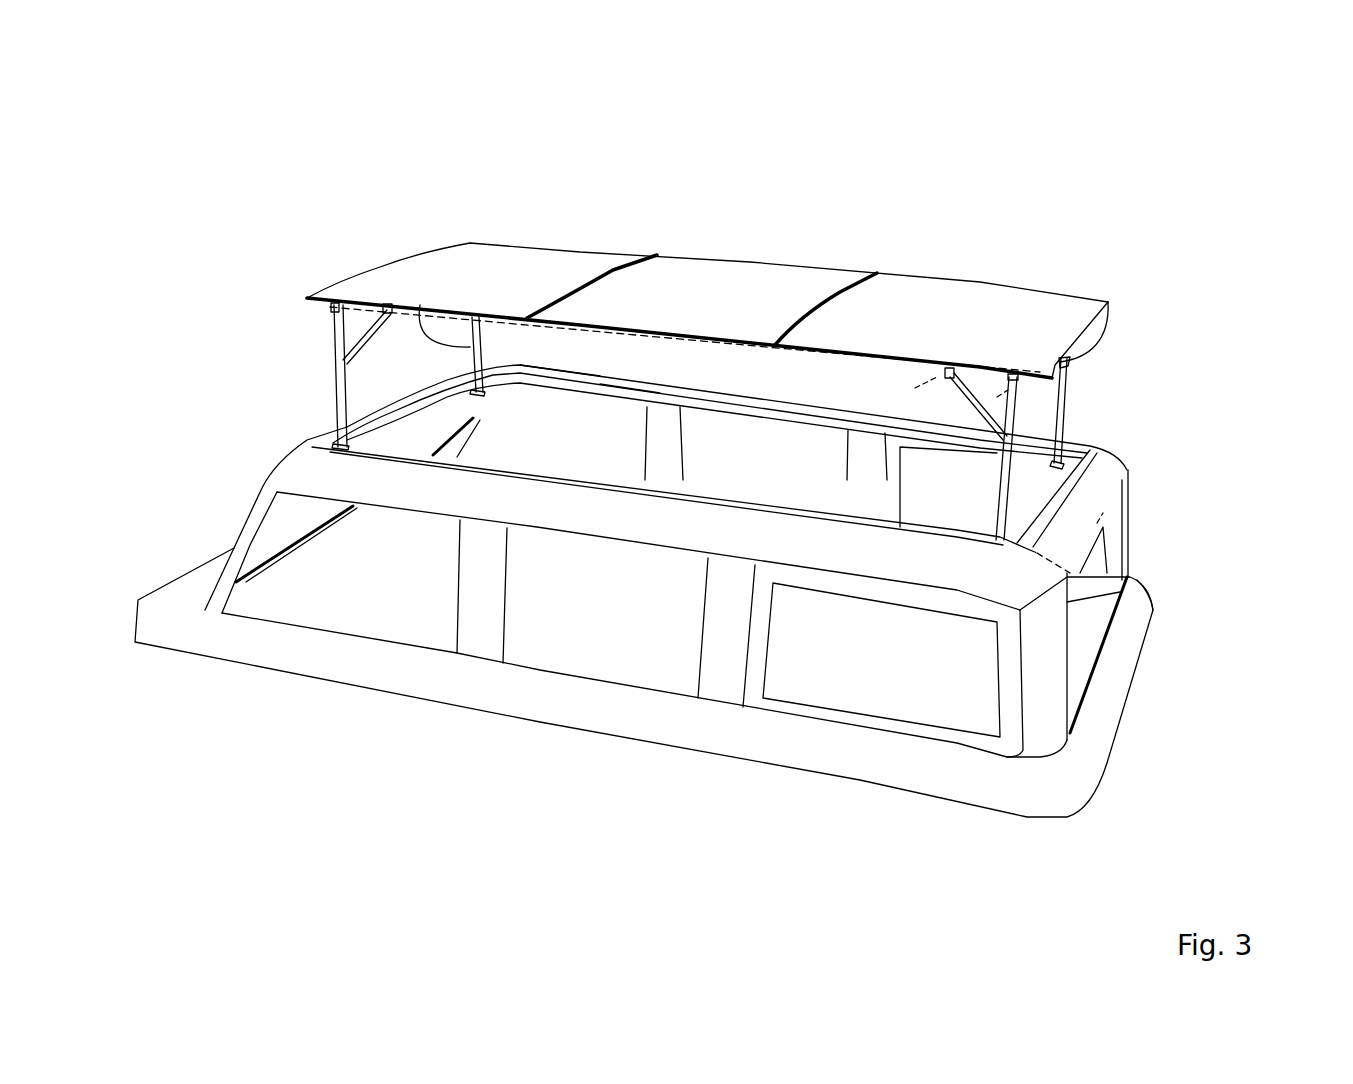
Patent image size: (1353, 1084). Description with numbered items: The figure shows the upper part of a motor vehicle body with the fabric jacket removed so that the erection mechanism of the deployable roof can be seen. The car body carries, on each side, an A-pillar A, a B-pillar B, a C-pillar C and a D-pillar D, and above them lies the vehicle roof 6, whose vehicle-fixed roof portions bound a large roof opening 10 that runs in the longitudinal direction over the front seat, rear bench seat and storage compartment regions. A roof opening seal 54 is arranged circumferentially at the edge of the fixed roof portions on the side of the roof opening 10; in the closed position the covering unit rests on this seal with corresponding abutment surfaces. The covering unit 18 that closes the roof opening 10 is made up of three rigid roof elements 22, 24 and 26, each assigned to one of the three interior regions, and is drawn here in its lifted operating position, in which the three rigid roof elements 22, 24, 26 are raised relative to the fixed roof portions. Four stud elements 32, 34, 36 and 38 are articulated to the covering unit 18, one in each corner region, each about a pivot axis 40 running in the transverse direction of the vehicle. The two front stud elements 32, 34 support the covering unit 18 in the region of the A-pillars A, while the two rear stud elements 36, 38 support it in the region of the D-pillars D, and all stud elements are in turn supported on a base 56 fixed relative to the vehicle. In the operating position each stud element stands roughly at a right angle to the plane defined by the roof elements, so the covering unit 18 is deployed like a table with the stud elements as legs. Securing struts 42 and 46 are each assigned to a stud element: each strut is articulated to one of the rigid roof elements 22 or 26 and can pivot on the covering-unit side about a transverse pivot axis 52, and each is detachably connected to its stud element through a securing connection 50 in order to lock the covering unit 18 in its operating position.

The vehicle roof 6 is at (672, 372).
The roof opening 10 is at (595, 368).
The covering unit 18 is at (751, 258).
The rigid roof element 22 is at (473, 243).
The rigid roof element 24 is at (812, 262).
The rigid roof element 26 is at (1052, 292).
The stud element 32 is at (334, 372).
The stud element 34 is at (420, 305).
The stud element 36 is at (1068, 404).
The stud element 38 is at (1020, 415).
The pivot axis 40 is at (332, 308).
The securing strut 42 is at (365, 332).
The securing strut 46 is at (1112, 300).
The securing connection 50 is at (1072, 370).
The pivot axis 52 is at (390, 302).
The roof opening seal 54 is at (623, 382).
The base 56 is at (500, 393).
The A-pillar A is at (212, 615).
The B-pillar B is at (480, 668).
The C-pillar C is at (720, 707).
The D-pillar D is at (1040, 757).